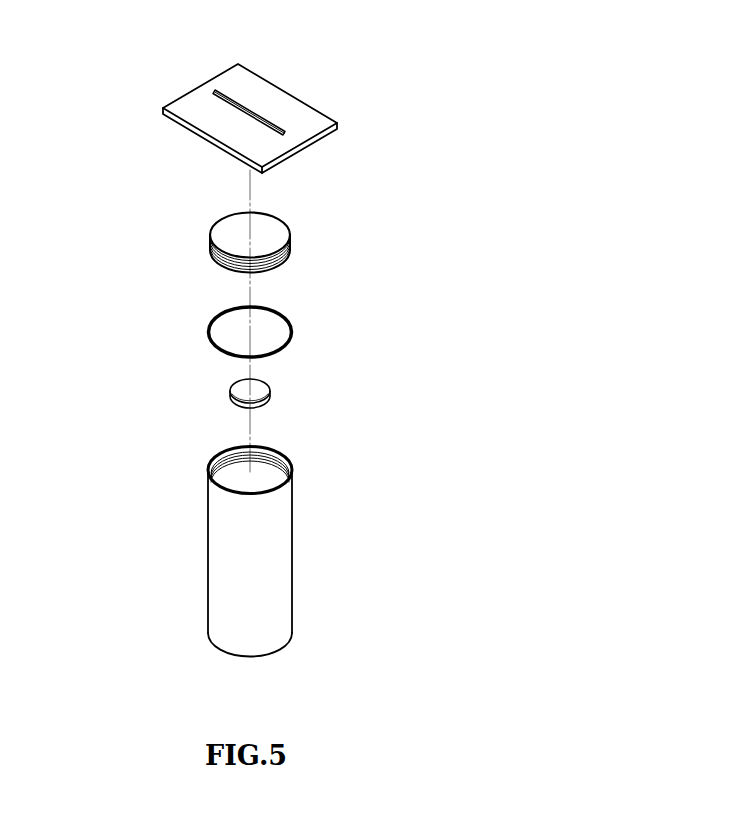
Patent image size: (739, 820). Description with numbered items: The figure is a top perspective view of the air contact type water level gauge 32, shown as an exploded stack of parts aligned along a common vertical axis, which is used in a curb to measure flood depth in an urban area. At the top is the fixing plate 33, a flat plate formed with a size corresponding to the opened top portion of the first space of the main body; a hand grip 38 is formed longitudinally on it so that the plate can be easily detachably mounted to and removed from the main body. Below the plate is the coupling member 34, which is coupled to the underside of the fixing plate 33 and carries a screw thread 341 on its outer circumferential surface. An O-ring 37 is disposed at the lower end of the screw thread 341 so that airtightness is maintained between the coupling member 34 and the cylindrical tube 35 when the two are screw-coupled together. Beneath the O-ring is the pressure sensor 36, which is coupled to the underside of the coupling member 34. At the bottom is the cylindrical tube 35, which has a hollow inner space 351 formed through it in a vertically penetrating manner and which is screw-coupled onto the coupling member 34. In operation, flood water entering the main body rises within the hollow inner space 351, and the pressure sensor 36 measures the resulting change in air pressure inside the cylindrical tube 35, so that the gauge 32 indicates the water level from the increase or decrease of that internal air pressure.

The air contact type water level gauge 32 is at (72, 73).
The fixing plate 33 is at (313, 122).
The hand grip 38 is at (230, 98).
The coupling member 34 is at (272, 228).
The screw thread 341 is at (290, 252).
The O-ring 37 is at (292, 332).
The pressure sensor 36 is at (260, 393).
The cylindrical tube 35 is at (280, 583).
The hollow inner space 351 is at (273, 472).